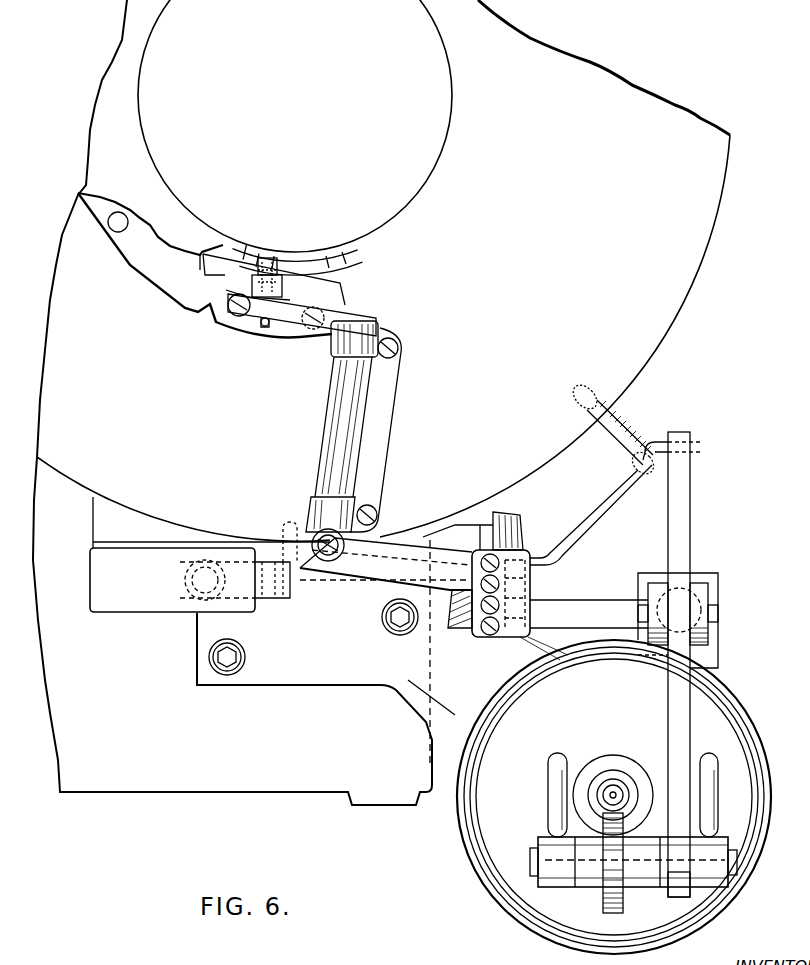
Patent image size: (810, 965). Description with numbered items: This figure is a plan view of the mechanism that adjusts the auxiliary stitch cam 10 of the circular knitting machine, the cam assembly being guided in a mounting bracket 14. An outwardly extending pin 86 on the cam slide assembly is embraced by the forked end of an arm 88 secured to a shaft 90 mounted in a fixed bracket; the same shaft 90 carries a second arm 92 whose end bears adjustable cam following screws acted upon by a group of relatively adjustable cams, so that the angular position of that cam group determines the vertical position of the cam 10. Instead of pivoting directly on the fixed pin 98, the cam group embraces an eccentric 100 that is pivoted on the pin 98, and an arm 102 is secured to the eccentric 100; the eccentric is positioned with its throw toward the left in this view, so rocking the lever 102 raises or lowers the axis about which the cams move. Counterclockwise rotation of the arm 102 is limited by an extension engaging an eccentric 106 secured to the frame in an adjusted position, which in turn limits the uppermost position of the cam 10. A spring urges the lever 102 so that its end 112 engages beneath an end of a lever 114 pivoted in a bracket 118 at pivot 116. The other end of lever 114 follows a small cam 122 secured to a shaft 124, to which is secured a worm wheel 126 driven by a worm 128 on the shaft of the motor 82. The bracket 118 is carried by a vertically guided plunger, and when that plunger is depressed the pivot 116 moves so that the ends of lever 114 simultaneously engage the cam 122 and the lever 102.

The auxiliary stitch cam 10 is at (325, 262).
The mounting bracket 14 is at (240, 325).
The pin 86 is at (267, 332).
The arm 88 is at (330, 313).
The shaft 90 is at (335, 430).
The second arm 92 is at (395, 590).
The pin 98 is at (492, 530).
The eccentric 100 is at (465, 626).
The arm 102 is at (568, 545).
The eccentric 106 is at (270, 598).
The end of lever 102 112 is at (700, 449).
The lever 114 is at (690, 525).
The pivot 116 is at (712, 615).
The bracket 118 is at (700, 595).
The small cam 122 is at (720, 896).
The shaft 124 is at (535, 855).
The worm wheel 126 is at (605, 900).
The worm 128 is at (618, 778).
The motor 82 is at (508, 905).